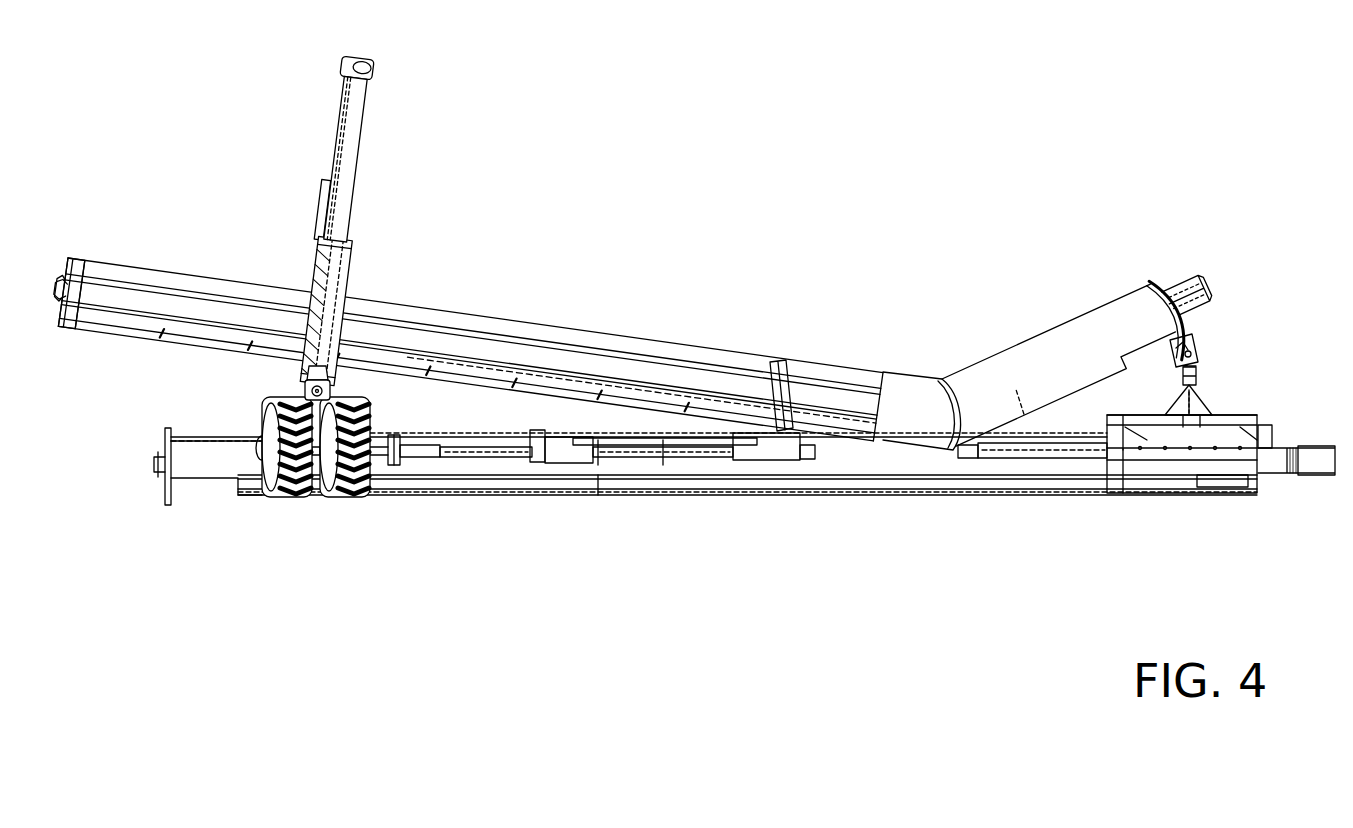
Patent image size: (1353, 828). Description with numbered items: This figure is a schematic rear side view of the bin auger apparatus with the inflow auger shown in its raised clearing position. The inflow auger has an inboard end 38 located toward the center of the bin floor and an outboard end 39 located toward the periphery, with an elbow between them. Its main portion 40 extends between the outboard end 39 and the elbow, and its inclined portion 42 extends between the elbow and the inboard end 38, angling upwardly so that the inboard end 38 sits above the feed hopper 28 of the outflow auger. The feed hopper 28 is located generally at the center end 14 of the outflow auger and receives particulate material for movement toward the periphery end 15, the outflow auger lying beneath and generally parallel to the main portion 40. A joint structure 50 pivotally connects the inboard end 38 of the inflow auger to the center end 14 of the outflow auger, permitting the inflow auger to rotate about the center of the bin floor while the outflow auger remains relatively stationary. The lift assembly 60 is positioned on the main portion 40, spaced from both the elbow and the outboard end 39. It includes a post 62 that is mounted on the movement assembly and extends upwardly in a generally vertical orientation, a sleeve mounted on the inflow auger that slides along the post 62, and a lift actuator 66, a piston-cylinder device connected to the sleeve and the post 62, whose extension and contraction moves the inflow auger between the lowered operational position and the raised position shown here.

The center end 14 is at (1244, 515).
The periphery end 15 is at (188, 527).
The feed hopper 28 is at (1232, 408).
The inboard end 38 is at (1173, 272).
The outboard end 39 is at (125, 245).
The main portion 40 is at (557, 328).
The inclined portion 42 is at (1017, 353).
The joint structure 50 is at (1212, 363).
The lift assembly 60 is at (390, 147).
The post 62 is at (303, 358).
The lift actuator 66 is at (348, 203).